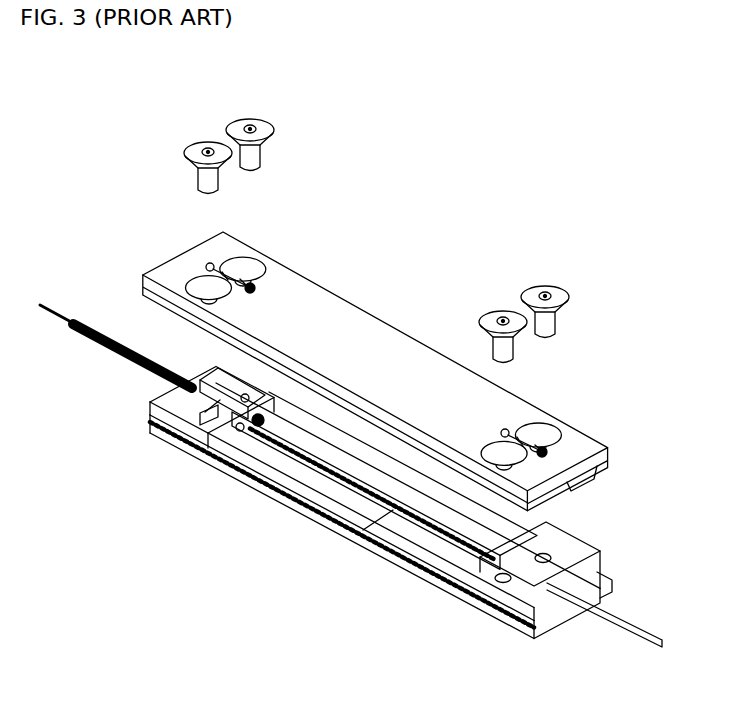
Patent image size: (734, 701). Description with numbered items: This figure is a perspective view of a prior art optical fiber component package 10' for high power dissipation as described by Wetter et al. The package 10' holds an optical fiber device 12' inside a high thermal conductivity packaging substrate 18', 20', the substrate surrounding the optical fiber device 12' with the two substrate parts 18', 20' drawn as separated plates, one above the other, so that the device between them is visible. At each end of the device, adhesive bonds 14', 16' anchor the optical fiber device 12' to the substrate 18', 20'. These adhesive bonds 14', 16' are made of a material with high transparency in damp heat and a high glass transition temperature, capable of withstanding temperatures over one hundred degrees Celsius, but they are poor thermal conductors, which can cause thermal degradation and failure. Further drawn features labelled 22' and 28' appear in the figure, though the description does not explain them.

The package 10' is at (449, 195).
The optical fiber device 12' is at (375, 511).
The adhesive bond 14' is at (191, 437).
The adhesive bond 16' is at (571, 609).
The packaging substrate 18' is at (342, 515).
The packaging substrate 20' is at (410, 371).
The carriage 22' is at (424, 480).
The cable 28' is at (152, 368).